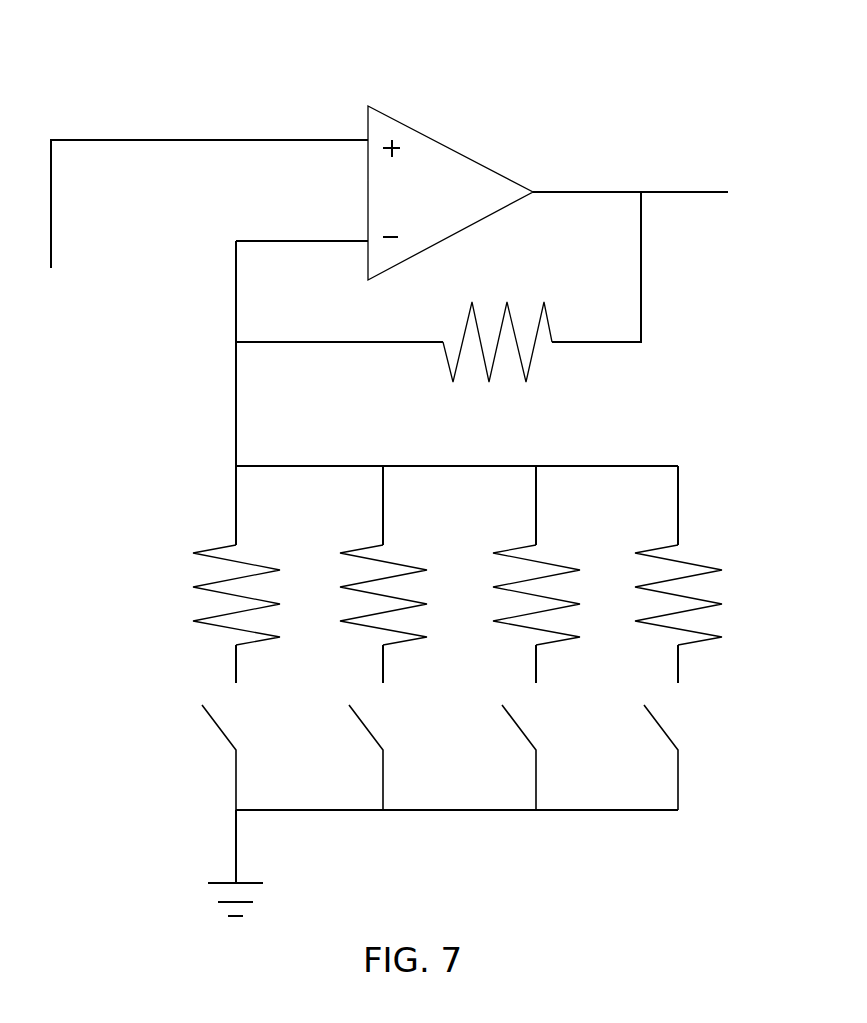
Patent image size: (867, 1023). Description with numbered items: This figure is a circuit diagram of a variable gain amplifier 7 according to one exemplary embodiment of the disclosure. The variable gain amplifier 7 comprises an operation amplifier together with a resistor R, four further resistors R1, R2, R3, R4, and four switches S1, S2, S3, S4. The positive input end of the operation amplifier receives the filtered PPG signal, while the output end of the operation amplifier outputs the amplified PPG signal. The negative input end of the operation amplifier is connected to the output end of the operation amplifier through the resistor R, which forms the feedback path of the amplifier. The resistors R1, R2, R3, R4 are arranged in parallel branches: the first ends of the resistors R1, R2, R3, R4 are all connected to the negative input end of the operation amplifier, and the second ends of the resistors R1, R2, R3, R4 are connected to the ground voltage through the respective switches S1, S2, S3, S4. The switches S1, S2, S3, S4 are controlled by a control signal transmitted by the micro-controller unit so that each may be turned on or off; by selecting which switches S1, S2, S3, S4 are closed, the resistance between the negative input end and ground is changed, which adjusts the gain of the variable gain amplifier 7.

The variable gain amplifier 7 is at (88, 47).
The resistor R is at (497, 365).
The resistor R1 is at (231, 574).
The resistor R2 is at (379, 574).
The resistor R3 is at (531, 574).
The resistor R4 is at (674, 574).
The switch S1 is at (188, 753).
The switch S2 is at (336, 753).
The switch S3 is at (488, 753).
The switch S4 is at (631, 754).